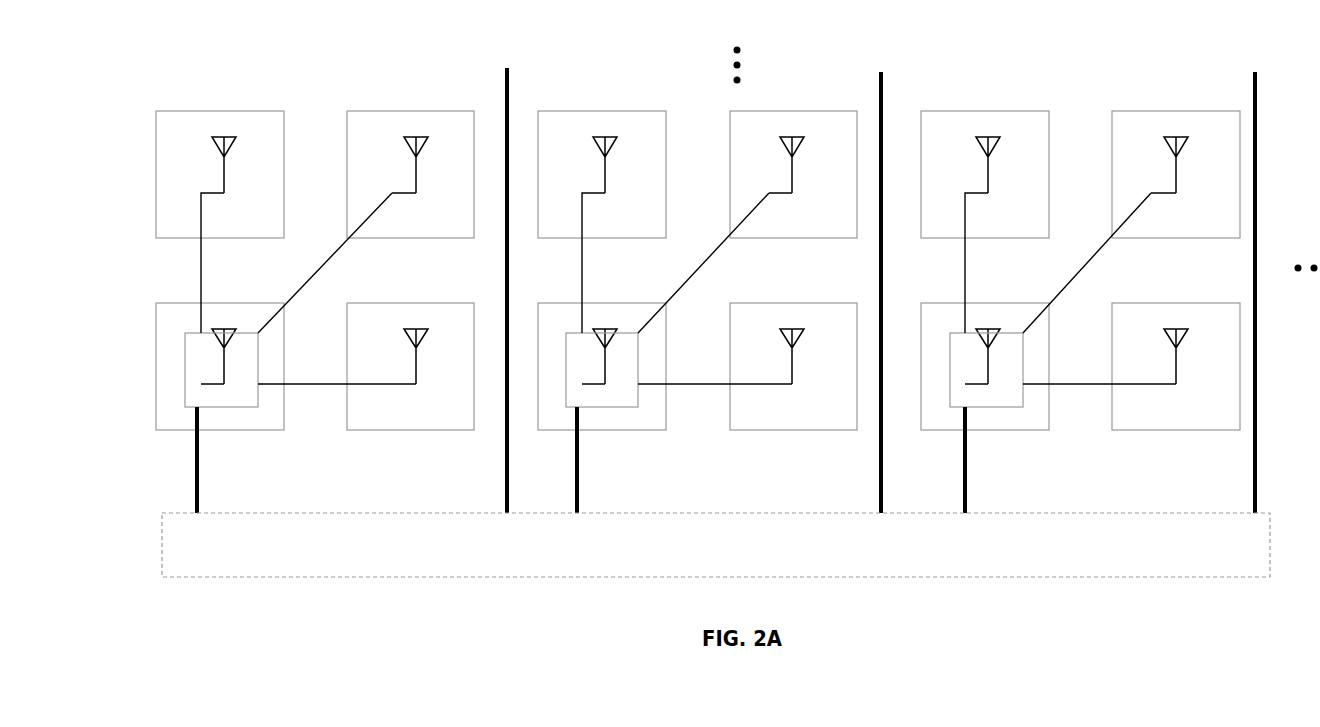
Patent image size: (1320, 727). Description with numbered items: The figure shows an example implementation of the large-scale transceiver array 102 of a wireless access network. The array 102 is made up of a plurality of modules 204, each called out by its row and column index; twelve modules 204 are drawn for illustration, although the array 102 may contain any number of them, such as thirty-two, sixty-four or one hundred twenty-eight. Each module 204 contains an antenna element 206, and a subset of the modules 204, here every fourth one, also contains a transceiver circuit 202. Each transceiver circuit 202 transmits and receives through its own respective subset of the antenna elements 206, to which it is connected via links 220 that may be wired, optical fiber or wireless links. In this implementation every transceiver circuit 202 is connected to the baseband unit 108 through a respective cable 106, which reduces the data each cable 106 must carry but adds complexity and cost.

The array 102 is at (233, 71).
The module 204 is at (1143, 303).
The antenna element 206 is at (231, 330).
The transceiver circuit 202 is at (950, 333).
The link 220 is at (200, 264).
The cable 106 is at (1254, 468).
The baseband unit 108 is at (469, 512).